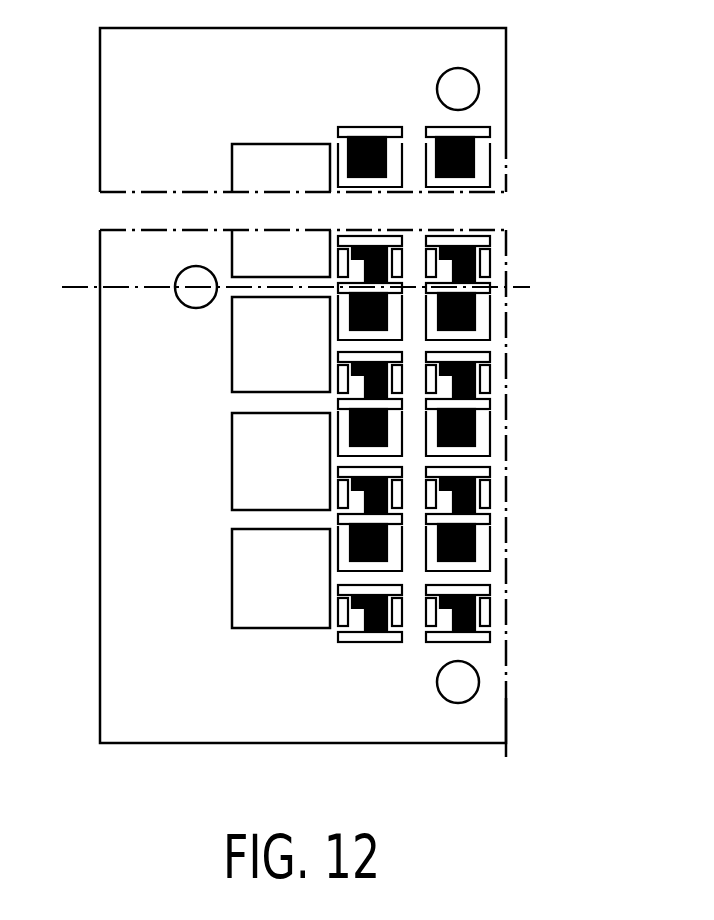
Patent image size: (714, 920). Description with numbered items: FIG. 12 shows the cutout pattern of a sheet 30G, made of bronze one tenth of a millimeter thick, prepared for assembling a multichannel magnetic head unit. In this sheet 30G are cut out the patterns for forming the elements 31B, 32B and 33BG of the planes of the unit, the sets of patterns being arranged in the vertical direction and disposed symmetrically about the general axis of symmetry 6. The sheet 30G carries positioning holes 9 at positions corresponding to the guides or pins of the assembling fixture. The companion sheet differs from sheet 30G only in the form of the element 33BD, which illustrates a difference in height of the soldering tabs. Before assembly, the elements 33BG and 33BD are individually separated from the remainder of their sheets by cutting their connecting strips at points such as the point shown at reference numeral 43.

The positioning holes 9 is at (480, 89).
The general axis of symmetry 6 is at (80, 286).
The cutting point of connecting strip 43 is at (486, 247).
The element of plane 3G 33BG is at (470, 359).
The element of plane 3G 32B is at (483, 378).
The element of plane 3G 31B is at (476, 428).
The element of sheet 30D 33BD is at (480, 609).
The sheet 30G is at (100, 526).